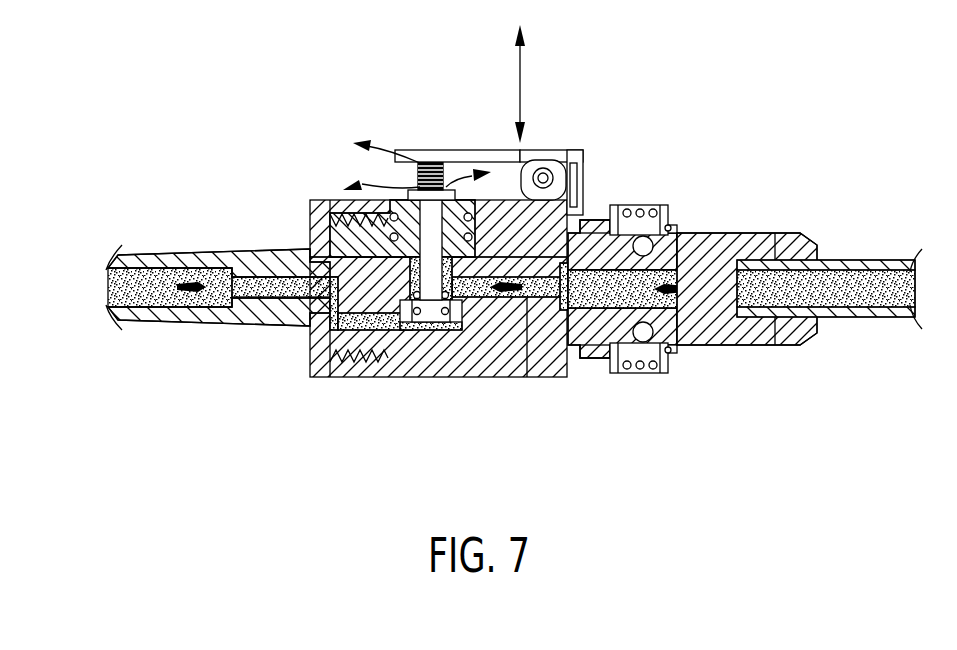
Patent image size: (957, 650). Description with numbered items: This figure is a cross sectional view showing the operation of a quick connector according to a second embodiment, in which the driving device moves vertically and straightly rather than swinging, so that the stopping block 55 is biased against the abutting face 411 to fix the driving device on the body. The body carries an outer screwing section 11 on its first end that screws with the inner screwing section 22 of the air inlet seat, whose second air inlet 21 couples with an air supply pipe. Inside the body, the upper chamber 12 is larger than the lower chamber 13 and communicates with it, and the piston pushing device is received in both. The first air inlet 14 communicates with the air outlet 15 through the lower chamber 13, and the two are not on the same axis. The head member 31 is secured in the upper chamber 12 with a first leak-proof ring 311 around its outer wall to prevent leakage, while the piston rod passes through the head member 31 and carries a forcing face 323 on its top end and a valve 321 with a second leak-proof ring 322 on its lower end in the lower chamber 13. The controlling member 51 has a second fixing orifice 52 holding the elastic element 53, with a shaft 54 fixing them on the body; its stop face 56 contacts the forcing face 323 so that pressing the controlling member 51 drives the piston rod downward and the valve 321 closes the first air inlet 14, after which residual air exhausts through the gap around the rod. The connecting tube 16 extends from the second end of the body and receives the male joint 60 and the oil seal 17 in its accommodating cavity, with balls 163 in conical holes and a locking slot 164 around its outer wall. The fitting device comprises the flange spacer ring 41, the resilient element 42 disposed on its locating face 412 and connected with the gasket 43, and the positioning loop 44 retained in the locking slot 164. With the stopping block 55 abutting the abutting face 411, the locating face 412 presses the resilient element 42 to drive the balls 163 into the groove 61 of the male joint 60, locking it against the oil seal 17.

The outer screwing section 11 is at (423, 366).
The upper chamber 12 is at (368, 201).
The lower chamber 13 is at (437, 325).
The first air inlet 14 is at (420, 330).
The air outlet 15 is at (527, 358).
The connecting tube 16 is at (600, 345).
The oil seal 17 is at (602, 205).
The second air inlet 21 is at (273, 292).
The inner screwing section 22 is at (357, 374).
The head member 31 is at (322, 203).
The flange spacer ring 41 is at (654, 302).
The resilient element 42 is at (684, 352).
The gasket 43 is at (665, 362).
The positioning loop 44 is at (773, 324).
The controlling member 51 is at (440, 150).
The second fixing orifice 52 is at (591, 114).
The elastic element 53 is at (452, 150).
The shaft 54 is at (558, 162).
The stopping block 55 is at (568, 172).
The stop face 56 is at (381, 86).
The male joint 60 is at (690, 236).
The groove 61 is at (680, 232).
The balls 163 is at (648, 222).
The locking slot 164 is at (660, 345).
The first leak-proof ring 311 is at (388, 237).
The valve 321 is at (453, 315).
The second leak-proof ring 322 is at (465, 330).
The forcing face 323 is at (423, 150).
The abutting face 411 is at (590, 218).
The locating face 412 is at (618, 355).